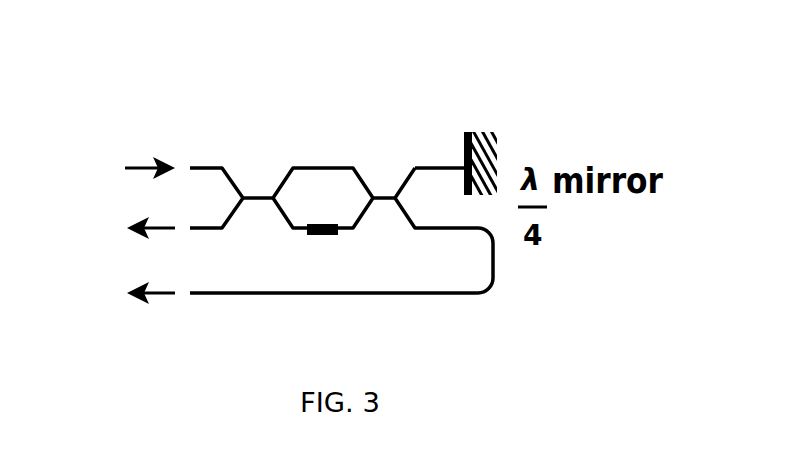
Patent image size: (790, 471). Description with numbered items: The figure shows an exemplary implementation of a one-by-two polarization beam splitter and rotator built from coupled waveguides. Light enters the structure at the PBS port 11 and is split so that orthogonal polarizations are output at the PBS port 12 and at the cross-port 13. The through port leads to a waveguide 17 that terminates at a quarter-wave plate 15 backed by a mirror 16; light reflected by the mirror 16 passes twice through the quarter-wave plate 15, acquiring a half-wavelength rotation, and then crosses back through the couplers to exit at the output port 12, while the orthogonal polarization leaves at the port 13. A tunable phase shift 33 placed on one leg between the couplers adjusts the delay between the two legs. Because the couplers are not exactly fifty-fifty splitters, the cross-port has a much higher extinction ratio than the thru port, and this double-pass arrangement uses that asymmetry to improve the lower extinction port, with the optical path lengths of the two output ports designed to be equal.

The PBS port 11 is at (100, 165).
The PBS port 12 is at (102, 227).
The cross-port 13 is at (102, 292).
The quarter-wave plate 15 is at (470, 130).
The mirror 16 is at (508, 148).
The waveguide 17 is at (445, 160).
The tunable phase shift 33 is at (320, 242).